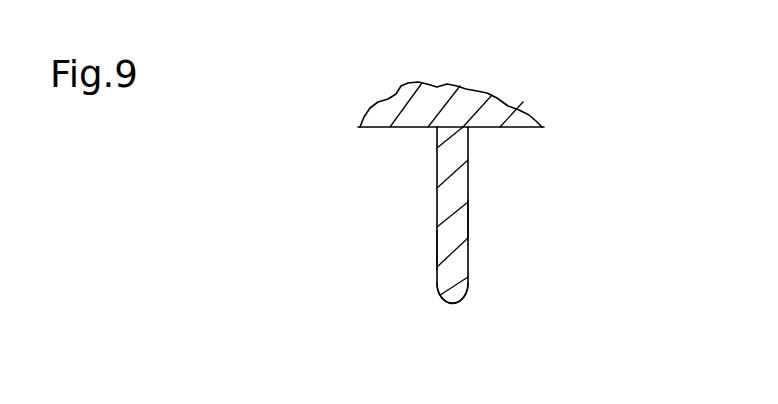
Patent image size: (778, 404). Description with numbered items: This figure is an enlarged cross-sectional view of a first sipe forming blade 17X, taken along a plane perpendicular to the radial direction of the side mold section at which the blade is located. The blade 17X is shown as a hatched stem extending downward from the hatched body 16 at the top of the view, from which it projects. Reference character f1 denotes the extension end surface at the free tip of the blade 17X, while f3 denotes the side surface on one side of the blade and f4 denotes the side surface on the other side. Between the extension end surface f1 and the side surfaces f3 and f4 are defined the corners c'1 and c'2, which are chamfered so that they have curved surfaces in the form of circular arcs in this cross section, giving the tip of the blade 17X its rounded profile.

The base member 16 is at (522, 127).
The first sipe forming blade 17X is at (434, 173).
The side surface f3 is at (468, 217).
The side surface f4 is at (437, 247).
The extension end surface f1 is at (448, 302).
The corner c'1 is at (509, 328).
The corner c'2 is at (410, 328).